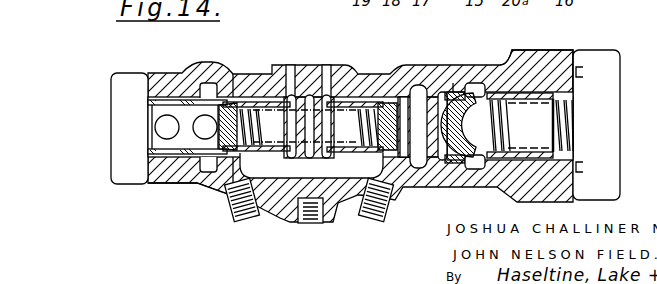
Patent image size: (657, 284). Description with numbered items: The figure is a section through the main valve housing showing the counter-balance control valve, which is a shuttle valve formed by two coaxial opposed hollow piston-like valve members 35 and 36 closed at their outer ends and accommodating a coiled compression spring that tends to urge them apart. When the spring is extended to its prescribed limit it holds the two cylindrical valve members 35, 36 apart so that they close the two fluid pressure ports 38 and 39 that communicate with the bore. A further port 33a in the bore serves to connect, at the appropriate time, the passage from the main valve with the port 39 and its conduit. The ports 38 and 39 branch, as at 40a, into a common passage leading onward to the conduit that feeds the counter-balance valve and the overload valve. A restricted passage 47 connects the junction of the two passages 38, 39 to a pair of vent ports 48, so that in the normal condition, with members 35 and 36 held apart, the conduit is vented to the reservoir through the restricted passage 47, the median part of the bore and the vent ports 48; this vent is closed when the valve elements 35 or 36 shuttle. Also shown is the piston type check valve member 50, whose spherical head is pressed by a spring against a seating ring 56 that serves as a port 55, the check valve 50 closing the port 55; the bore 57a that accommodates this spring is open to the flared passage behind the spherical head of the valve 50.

The hollow piston-like valve member 35 is at (234, 73).
The vent ports 48 is at (327, 83).
The further port 33a is at (421, 105).
The seating ring 56 is at (453, 90).
The port 55 is at (476, 83).
The bore 57a is at (528, 90).
The piston type check valve member 50 is at (477, 133).
The port 38 is at (203, 192).
The restricted passage 47 is at (271, 214).
The branch 40a is at (320, 187).
The port 39 is at (377, 186).
The hollow piston-like valve member 36 is at (378, 156).